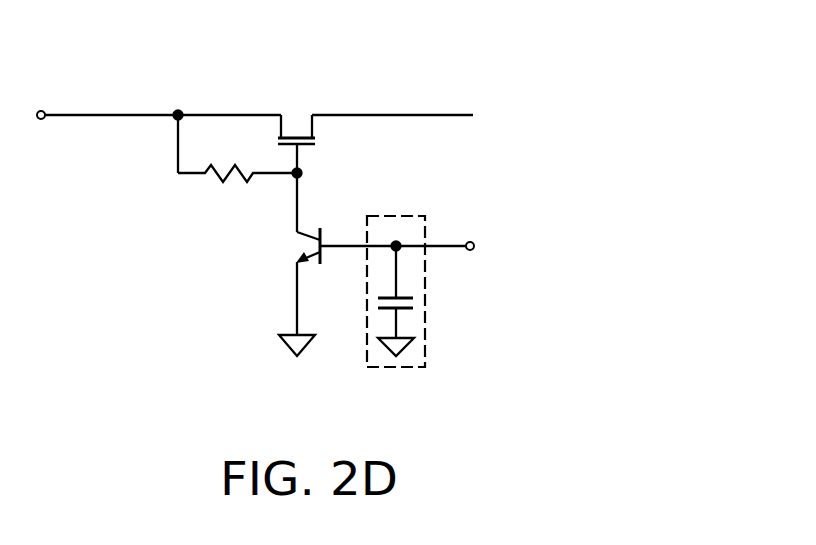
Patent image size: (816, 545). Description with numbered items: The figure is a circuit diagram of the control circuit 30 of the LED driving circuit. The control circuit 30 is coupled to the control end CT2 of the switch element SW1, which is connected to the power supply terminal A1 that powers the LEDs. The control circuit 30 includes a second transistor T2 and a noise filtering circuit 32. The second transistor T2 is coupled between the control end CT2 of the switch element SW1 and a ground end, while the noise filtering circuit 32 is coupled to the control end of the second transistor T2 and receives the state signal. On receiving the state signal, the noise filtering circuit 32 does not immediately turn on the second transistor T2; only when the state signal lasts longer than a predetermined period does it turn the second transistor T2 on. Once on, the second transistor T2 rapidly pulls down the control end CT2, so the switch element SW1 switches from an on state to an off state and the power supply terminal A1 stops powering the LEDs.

The control circuit 30 is at (518, 112).
The noise filtering circuit 32 is at (405, 216).
The power supply terminal A1 is at (101, 92).
The switch element SW1 is at (300, 126).
The control end CT2 is at (326, 176).
The second transistor T2 is at (287, 291).